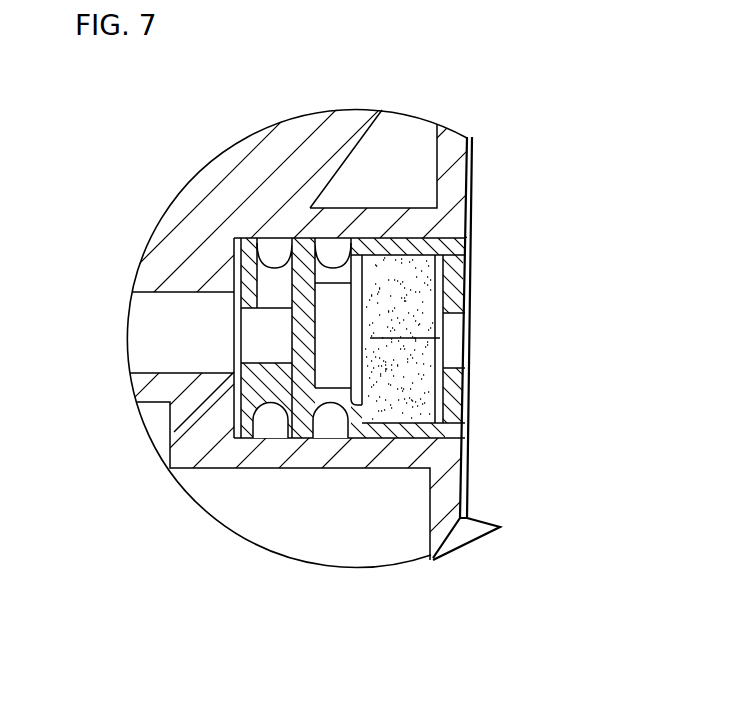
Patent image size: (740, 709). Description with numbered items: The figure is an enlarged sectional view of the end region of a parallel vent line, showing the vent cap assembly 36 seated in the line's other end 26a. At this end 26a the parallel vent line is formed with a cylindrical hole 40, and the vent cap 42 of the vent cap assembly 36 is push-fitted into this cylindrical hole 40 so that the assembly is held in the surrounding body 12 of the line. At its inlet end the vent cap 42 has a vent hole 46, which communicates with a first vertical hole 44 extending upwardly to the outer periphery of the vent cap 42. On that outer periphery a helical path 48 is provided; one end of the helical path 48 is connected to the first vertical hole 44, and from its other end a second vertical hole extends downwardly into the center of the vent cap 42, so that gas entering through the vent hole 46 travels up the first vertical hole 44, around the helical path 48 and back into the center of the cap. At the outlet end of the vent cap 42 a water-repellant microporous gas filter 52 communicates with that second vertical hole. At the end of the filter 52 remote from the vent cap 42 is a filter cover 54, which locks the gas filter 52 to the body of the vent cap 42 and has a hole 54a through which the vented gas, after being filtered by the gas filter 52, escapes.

The housing body 12 is at (289, 196).
The other end of parallel vent line 26a is at (183, 316).
The vent cap assembly 36 is at (302, 418).
The cylindrical hole 40 is at (466, 462).
The vent cap 42 is at (313, 428).
The first vertical hole 44 is at (268, 290).
The vent hole 46 is at (263, 340).
The helical path 48 is at (285, 418).
The water-repellant microporous gas filter 52 is at (398, 287).
The filter cover 54 is at (467, 390).
The hole 54a is at (458, 330).